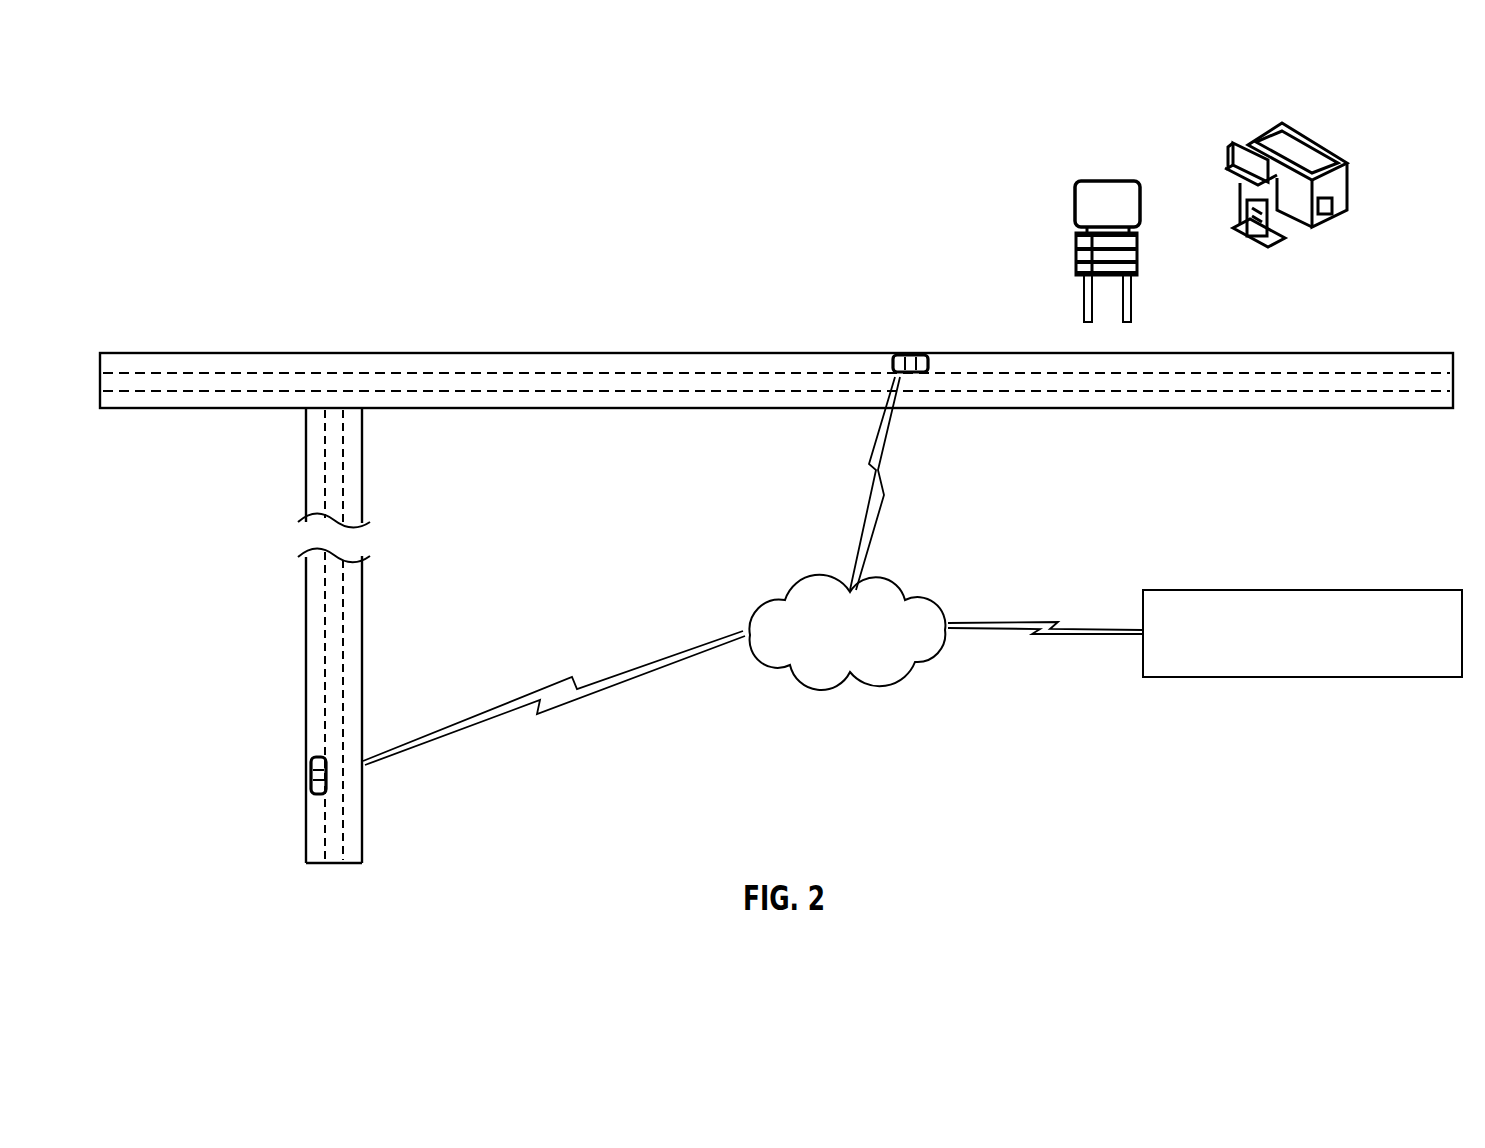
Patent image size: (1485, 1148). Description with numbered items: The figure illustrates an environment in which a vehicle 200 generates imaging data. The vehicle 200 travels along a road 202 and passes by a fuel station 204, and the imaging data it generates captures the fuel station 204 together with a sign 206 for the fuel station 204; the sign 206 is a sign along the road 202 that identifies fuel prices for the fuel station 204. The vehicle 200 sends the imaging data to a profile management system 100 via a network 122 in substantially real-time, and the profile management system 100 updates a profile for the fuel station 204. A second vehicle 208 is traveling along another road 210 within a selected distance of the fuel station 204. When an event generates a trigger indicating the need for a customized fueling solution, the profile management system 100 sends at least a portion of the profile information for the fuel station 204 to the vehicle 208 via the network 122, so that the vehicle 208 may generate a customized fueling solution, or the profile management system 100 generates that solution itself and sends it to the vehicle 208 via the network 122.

The profile management system 100 is at (1402, 590).
The network 122 is at (796, 596).
The vehicle 200 is at (919, 353).
The road 202 is at (472, 352).
The fuel station 204 is at (1360, 120).
The sign 206 is at (1110, 179).
The vehicle 208 is at (310, 772).
The road 210 is at (364, 613).